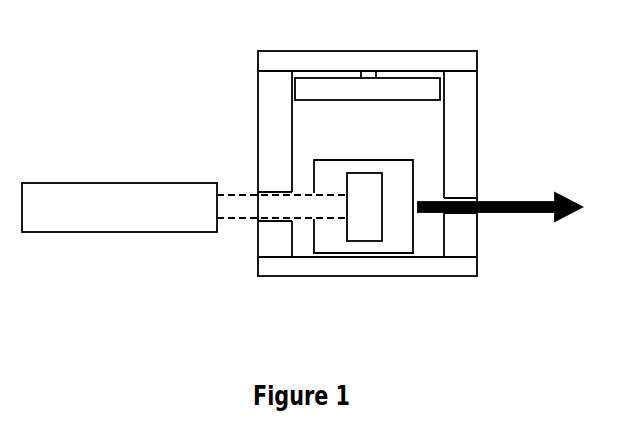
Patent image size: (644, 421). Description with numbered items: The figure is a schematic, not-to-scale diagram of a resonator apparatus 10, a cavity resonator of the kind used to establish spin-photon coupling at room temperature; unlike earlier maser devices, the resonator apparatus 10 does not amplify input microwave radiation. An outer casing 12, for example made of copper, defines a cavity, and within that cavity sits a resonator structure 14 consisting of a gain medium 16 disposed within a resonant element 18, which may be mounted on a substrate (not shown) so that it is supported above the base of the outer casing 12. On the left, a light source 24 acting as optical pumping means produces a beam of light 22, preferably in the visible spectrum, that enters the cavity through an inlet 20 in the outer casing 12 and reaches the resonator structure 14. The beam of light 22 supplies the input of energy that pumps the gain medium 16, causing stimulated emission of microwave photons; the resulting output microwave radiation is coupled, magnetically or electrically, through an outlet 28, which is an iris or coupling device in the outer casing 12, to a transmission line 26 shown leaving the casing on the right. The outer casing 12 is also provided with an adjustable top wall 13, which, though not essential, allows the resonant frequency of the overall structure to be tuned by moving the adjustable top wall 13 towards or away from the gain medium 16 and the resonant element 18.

The resonator apparatus 10 is at (501, 51).
The outer casing 12 is at (469, 128).
The adjustable top wall 13 is at (305, 88).
The resonator structure 14 is at (383, 224).
The gain medium 16 is at (365, 233).
The resonant element 18 is at (403, 243).
The inlet 20 is at (258, 190).
The beam of light 22 is at (253, 214).
The light source 24 is at (113, 223).
The transmission line 26 is at (535, 197).
The outlet 28 is at (477, 201).